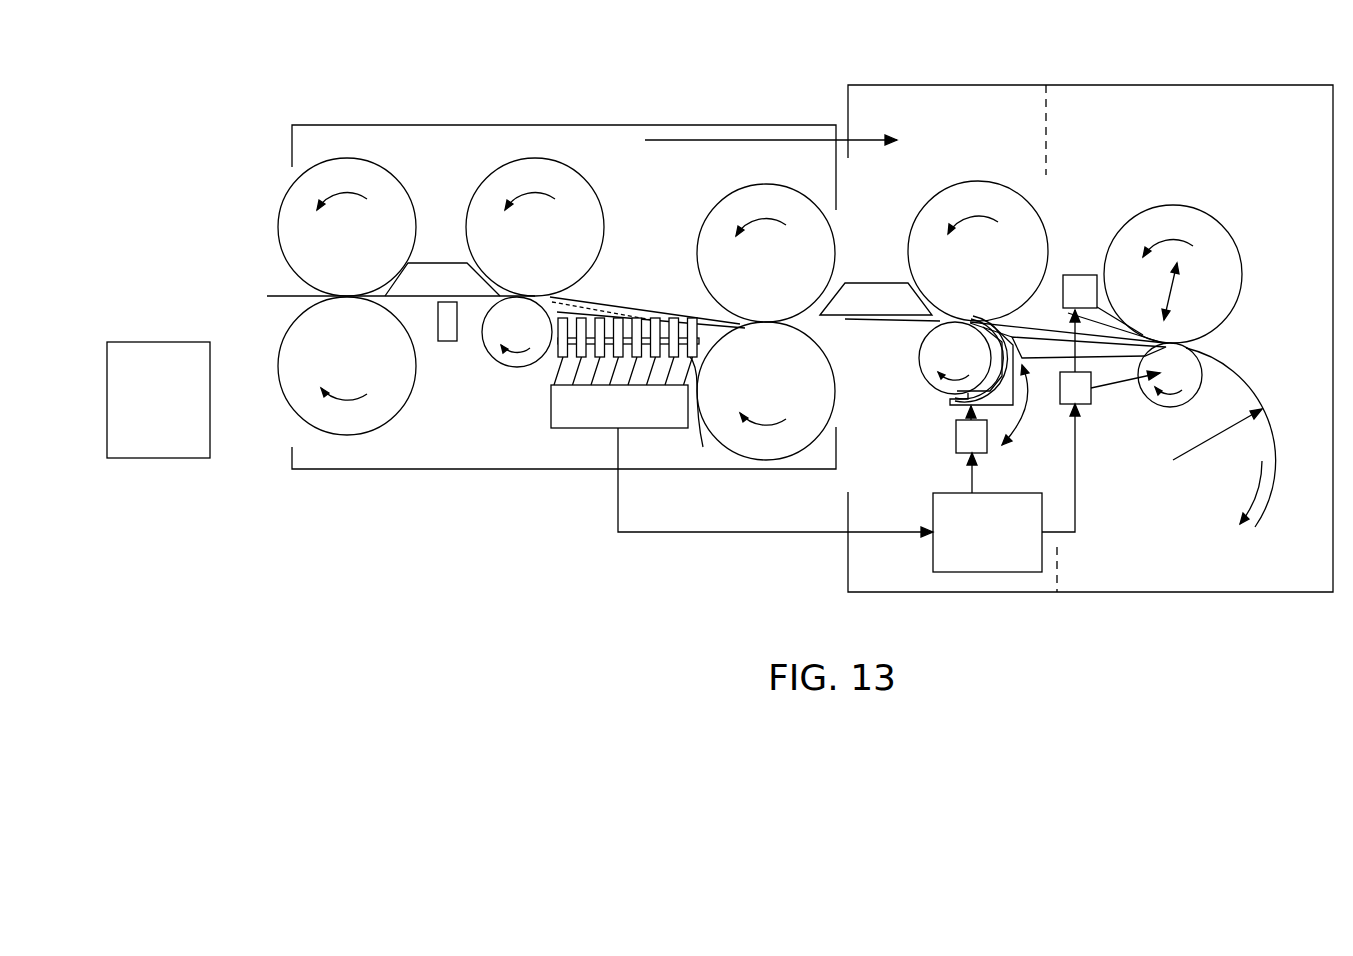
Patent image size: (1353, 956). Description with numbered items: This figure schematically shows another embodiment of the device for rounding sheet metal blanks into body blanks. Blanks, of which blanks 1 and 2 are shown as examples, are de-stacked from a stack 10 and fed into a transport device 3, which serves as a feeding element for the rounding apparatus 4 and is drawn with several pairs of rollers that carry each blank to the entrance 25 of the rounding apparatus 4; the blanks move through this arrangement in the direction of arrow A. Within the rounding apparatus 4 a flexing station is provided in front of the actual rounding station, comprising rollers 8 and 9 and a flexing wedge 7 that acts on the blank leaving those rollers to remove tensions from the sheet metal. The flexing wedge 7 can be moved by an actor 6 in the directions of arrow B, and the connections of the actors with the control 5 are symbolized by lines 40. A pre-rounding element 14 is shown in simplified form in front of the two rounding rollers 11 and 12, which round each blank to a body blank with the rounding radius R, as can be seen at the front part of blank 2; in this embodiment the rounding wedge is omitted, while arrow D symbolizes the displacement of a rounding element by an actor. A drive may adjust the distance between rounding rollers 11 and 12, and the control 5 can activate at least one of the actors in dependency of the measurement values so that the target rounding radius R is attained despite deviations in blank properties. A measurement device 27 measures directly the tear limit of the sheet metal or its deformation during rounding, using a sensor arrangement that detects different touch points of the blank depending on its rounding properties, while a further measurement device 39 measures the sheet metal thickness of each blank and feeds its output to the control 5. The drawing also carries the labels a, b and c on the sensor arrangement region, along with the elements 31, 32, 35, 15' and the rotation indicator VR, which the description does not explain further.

The blank 1 is at (280, 298).
The blank 2 is at (1281, 463).
The transport device 3 is at (510, 118).
The rounding apparatus 4 is at (998, 83).
The control 5 is at (977, 542).
The actor 6 is at (956, 437).
The flexing wedge 7 is at (1001, 393).
The roller 8 is at (944, 368).
The roller 9 is at (961, 270).
The stack 10 is at (157, 439).
The rounding roller 11 is at (1213, 252).
The rounding roller 12 is at (1191, 378).
The pre-rounding element 14 is at (1080, 292).
The control device 15' is at (1091, 421).
The entrance 25 is at (866, 278).
The measurement device 27 is at (563, 418).
The roller 31 is at (498, 335).
The guide element 32 is at (444, 272).
The tape feeding device 35 is at (652, 322).
The measurement device 39 is at (448, 333).
The lines 40 is at (1057, 532).
The tape position a is at (553, 299).
The tape position b is at (585, 312).
The tape position c is at (618, 316).
The arrow A is at (771, 156).
The arrow B is at (1022, 405).
The arrow D is at (1160, 291).
The rounding radius R is at (1190, 448).
The reel rotation direction VR is at (1236, 492).